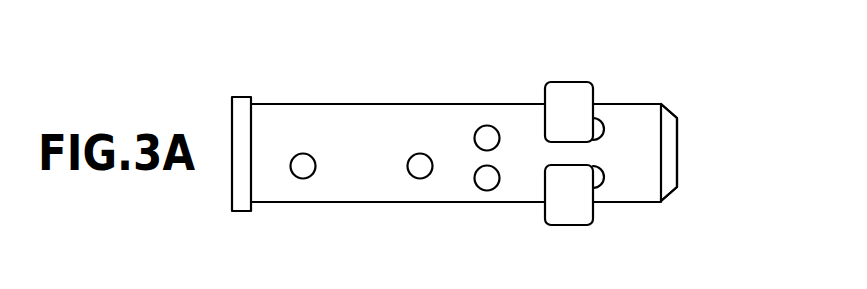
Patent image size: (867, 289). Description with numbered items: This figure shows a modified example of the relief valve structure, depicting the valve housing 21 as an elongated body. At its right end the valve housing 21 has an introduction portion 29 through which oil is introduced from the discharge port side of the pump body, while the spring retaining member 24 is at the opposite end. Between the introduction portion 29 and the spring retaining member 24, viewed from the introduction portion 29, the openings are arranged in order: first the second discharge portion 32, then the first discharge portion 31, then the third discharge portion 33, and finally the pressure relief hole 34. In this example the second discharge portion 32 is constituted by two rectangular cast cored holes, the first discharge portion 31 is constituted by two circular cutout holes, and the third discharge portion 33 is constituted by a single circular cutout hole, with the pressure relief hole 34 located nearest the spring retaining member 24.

The valve housing 21 is at (363, 182).
The spring retaining member 24 is at (242, 200).
The introduction portion 29 is at (677, 148).
The first discharge portion 31 is at (498, 142).
The second discharge portion 32 is at (593, 95).
The third discharge portion 33 is at (409, 166).
The pressure relief hole 34 is at (293, 166).